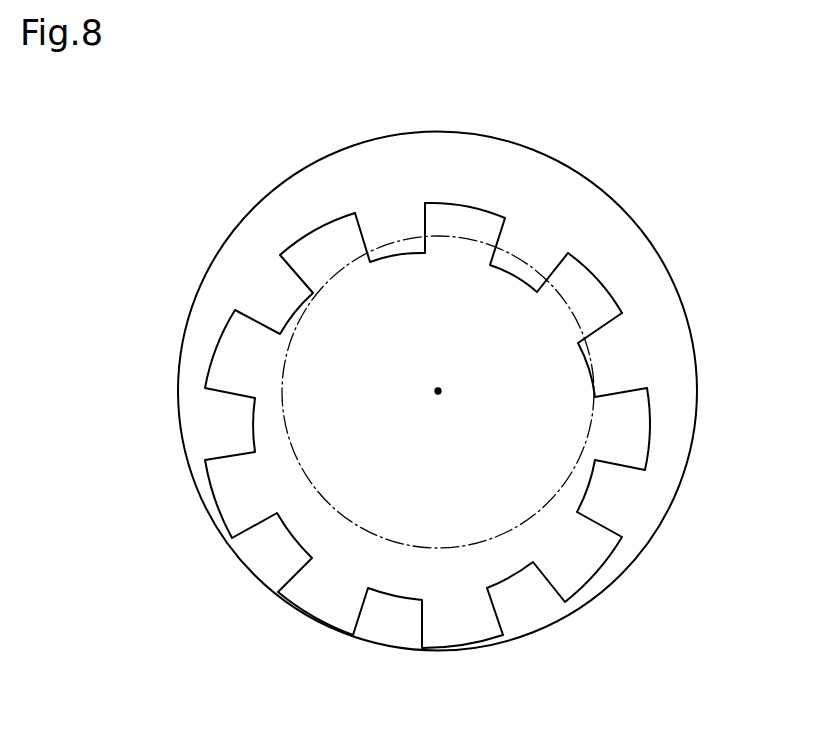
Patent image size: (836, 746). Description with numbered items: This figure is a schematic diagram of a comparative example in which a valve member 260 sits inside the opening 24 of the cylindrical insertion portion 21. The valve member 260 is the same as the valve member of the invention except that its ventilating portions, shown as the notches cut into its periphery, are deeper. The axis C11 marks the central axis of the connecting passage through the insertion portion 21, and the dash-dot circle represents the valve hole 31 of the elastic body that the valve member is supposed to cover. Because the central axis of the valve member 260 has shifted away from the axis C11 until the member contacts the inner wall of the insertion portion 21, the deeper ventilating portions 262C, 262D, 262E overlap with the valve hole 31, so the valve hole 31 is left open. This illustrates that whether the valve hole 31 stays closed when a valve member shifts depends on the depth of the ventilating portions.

The insertion portion 21 is at (473, 391).
The opening 24 is at (686, 302).
The valve member 260 is at (673, 427).
The ventilating portion 262C is at (400, 255).
The ventilating portion 262D is at (515, 277).
The ventilating portion 262E is at (594, 365).
The valve hole 31 is at (493, 539).
The axis C11 is at (439, 389).